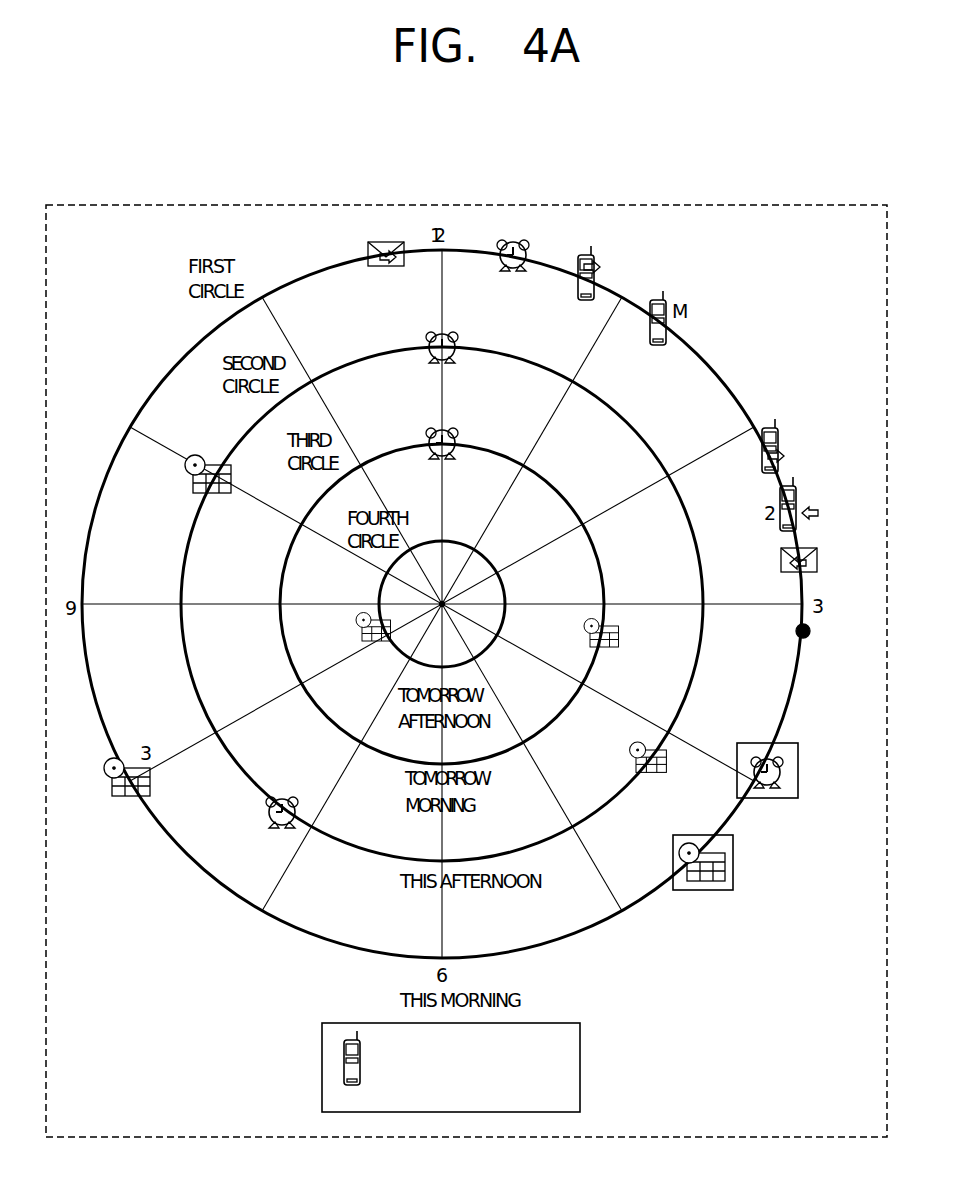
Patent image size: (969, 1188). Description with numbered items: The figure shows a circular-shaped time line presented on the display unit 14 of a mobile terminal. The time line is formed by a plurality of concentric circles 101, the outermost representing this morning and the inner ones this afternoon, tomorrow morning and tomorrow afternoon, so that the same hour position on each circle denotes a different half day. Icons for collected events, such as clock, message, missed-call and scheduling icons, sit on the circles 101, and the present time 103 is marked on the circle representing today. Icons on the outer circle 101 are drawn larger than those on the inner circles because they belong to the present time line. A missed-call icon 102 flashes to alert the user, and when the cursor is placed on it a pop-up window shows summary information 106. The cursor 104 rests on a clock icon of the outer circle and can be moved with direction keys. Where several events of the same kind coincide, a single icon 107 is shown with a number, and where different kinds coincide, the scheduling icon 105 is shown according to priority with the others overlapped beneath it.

The display unit 14 is at (467, 204).
The circular time lines 101 is at (250, 433).
The icon 102 is at (780, 437).
The present time 103 is at (850, 612).
The cursor 104 is at (800, 772).
The scheduling icon 105 is at (735, 863).
The summary information 106 is at (580, 1068).
The icon 107 is at (125, 798).